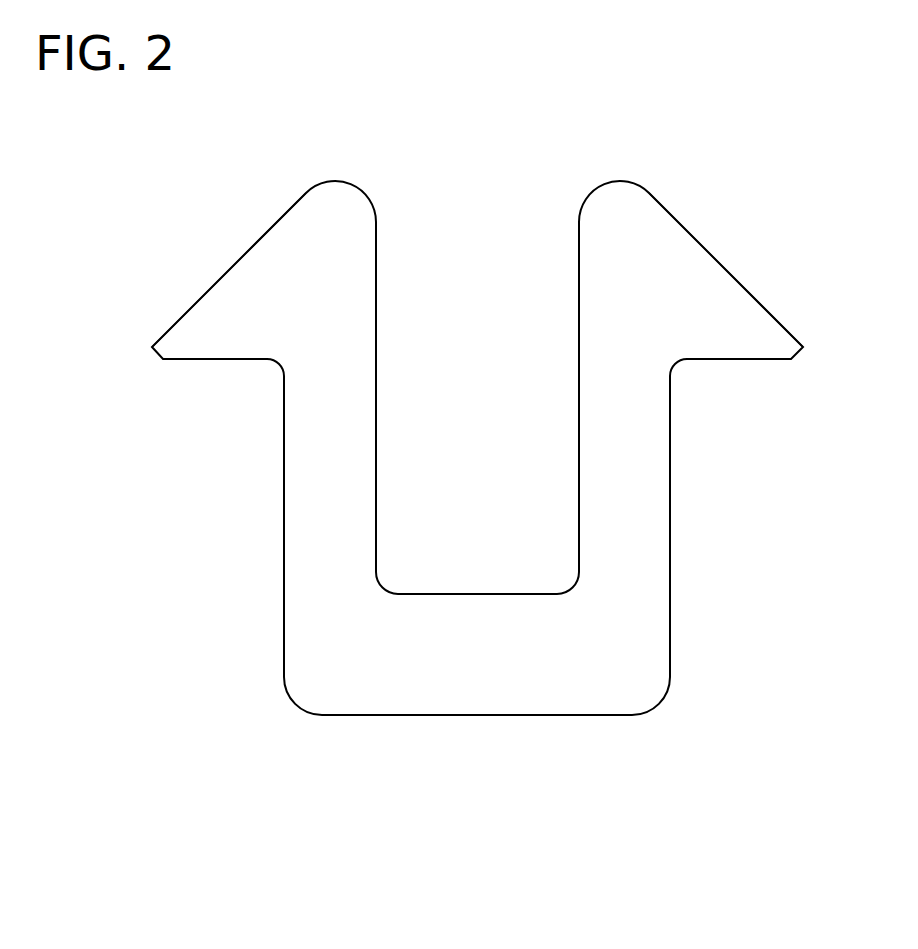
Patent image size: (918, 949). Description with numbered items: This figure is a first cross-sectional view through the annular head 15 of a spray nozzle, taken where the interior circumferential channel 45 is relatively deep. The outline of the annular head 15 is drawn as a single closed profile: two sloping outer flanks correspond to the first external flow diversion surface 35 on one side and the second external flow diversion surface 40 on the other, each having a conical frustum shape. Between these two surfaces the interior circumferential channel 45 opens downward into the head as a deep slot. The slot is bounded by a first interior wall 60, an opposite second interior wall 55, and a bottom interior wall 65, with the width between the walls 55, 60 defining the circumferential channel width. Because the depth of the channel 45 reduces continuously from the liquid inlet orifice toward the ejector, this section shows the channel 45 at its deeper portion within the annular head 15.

The annular head 15 is at (284, 523).
The first external flow diversion surface 35 is at (727, 270).
The second external flow diversion surface 40 is at (228, 268).
The interior circumferential channel 45 is at (507, 345).
The right inner wall 55 is at (579, 263).
The left inner wall 60 is at (377, 287).
The channel bottom 65 is at (477, 593).